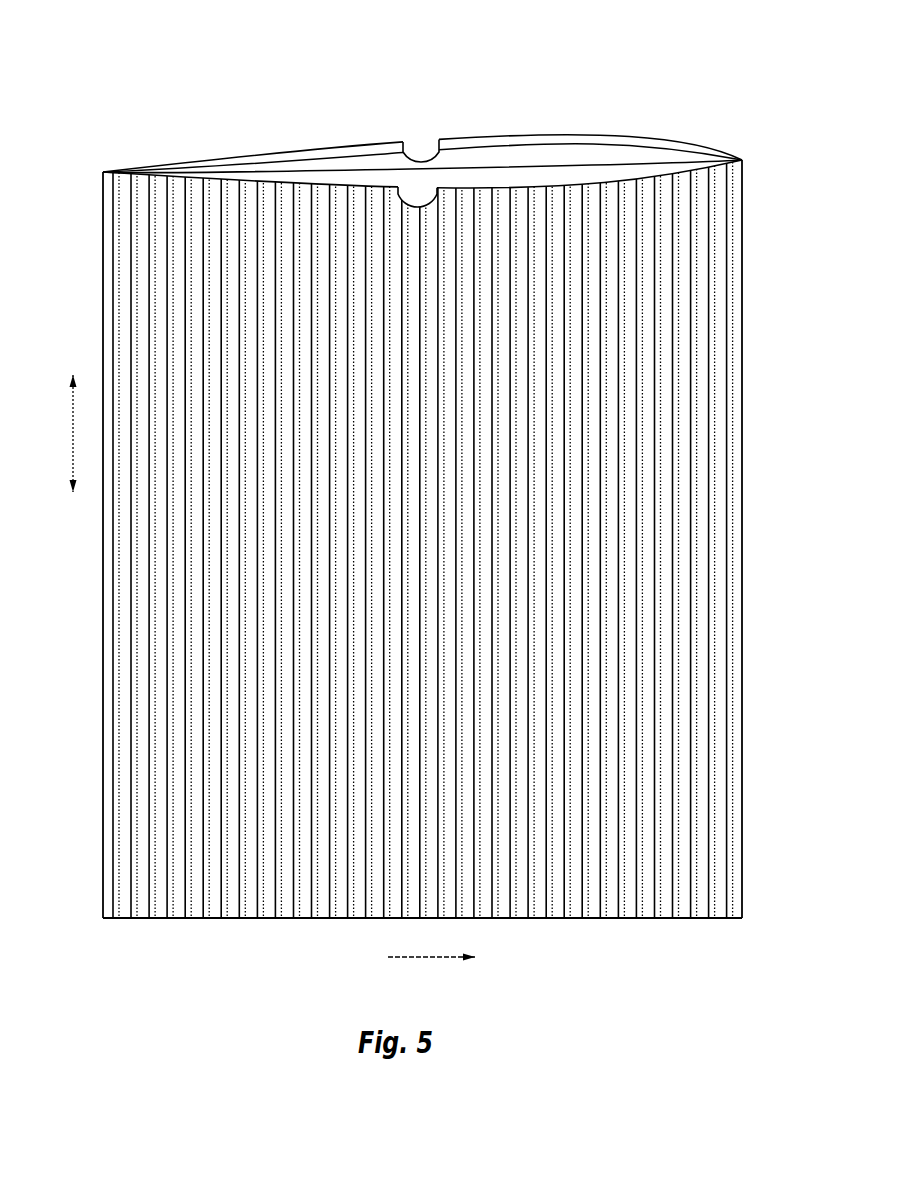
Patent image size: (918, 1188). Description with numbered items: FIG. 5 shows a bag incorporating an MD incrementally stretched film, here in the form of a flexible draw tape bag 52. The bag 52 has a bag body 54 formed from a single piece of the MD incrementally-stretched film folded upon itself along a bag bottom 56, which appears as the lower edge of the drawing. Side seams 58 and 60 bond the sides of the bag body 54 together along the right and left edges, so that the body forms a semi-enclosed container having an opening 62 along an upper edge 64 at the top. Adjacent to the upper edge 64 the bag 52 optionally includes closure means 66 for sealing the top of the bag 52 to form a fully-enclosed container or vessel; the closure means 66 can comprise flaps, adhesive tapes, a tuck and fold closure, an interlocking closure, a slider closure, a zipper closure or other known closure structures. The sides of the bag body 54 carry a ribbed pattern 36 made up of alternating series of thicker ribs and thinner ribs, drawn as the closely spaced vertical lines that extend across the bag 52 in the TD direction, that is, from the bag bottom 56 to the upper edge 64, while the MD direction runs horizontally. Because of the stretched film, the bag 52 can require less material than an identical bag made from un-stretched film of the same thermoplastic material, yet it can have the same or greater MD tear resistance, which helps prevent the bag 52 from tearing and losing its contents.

The flexible draw tape bag 52 is at (102, 50).
The ribbed pattern 36 is at (755, 815).
The bag body 54 is at (753, 185).
The bag bottom 56 is at (680, 918).
The side seam 58 is at (745, 543).
The side seam 60 is at (102, 543).
The opening 62 is at (537, 185).
The upper edge 64 is at (340, 147).
The closure means 66 is at (424, 141).